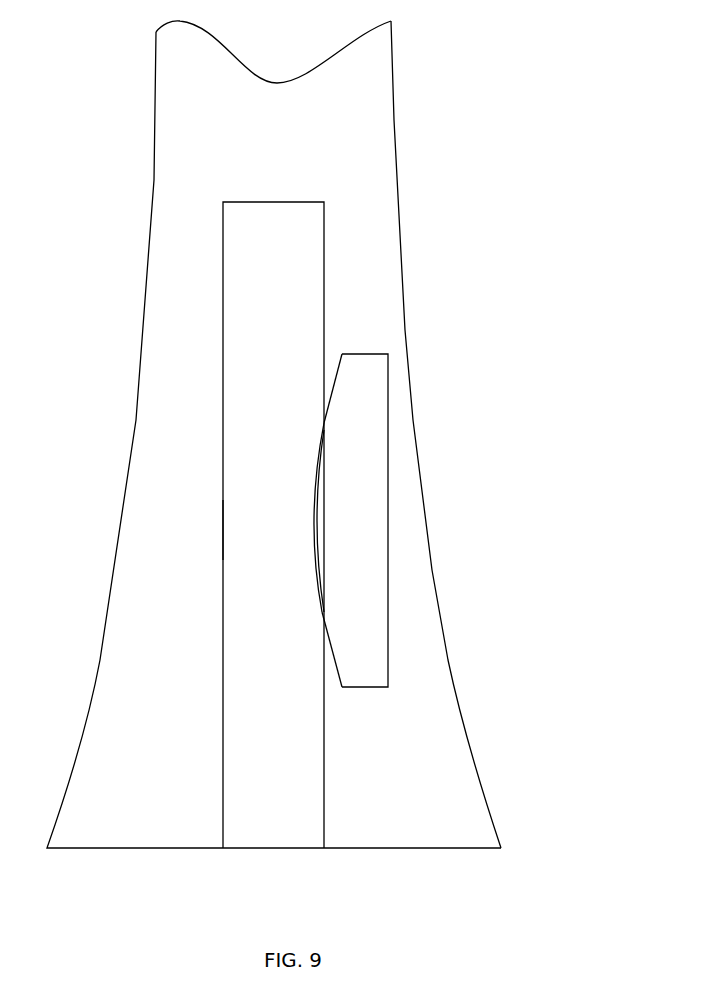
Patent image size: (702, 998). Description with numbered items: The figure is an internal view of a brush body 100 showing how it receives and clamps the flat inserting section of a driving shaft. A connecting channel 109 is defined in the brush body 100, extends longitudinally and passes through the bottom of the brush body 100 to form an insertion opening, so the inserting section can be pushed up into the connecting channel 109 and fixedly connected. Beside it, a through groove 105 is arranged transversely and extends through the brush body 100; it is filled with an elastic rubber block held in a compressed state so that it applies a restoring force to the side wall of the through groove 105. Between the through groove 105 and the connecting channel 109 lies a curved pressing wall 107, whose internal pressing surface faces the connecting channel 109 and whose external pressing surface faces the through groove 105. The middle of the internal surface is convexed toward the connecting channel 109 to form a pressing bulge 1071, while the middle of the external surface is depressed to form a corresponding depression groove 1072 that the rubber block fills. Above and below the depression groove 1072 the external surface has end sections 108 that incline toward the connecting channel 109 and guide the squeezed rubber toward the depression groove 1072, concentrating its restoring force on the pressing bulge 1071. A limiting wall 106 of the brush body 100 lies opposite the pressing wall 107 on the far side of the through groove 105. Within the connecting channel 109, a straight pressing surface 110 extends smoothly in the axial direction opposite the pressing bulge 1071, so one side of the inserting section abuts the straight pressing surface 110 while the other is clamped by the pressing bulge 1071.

The brush body 100 is at (158, 489).
The through groove 105 is at (355, 505).
The limiting wall 106 is at (398, 530).
The pressing wall 107 is at (314, 504).
The pressing bulge 1071 is at (318, 490).
The depression groove 1072 is at (318, 488).
The end section 108 is at (338, 382).
The connecting channel 109 is at (280, 358).
The straight pressing surface 110 is at (223, 528).